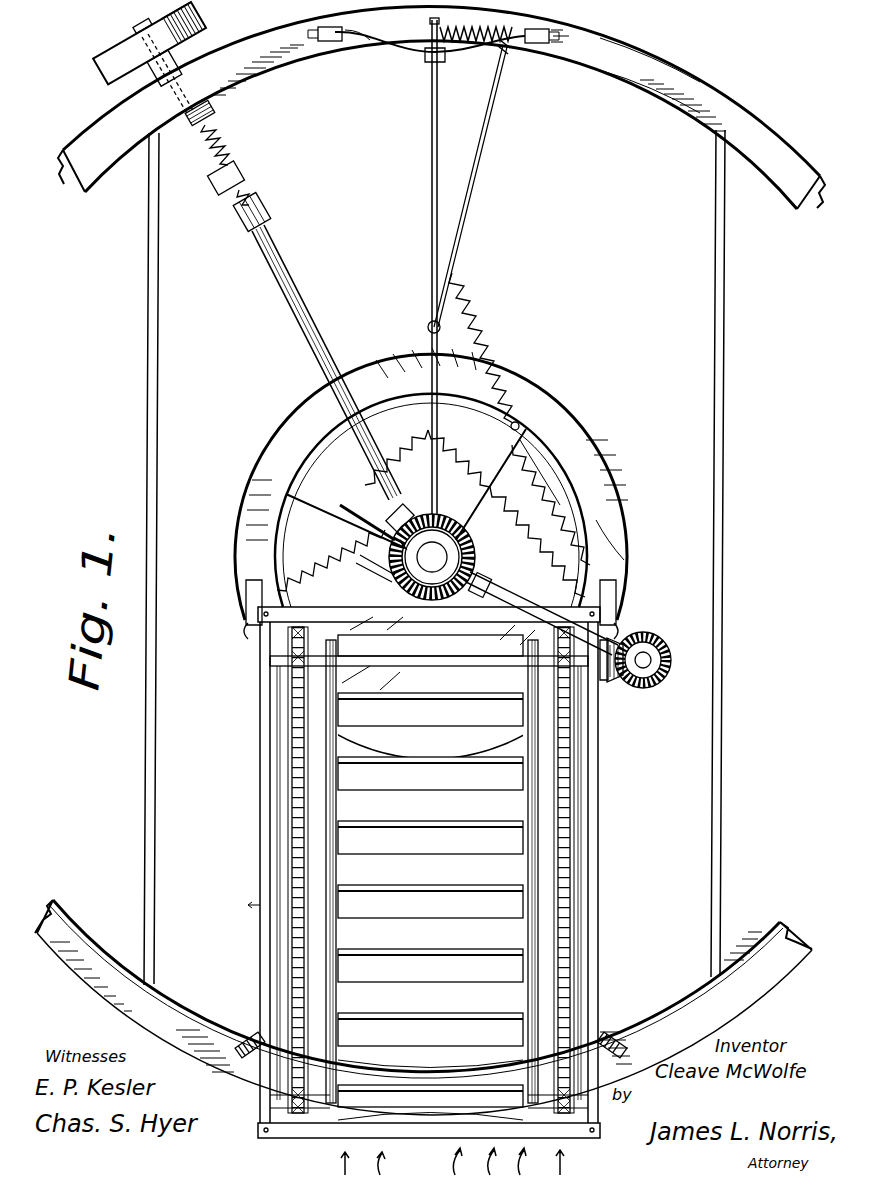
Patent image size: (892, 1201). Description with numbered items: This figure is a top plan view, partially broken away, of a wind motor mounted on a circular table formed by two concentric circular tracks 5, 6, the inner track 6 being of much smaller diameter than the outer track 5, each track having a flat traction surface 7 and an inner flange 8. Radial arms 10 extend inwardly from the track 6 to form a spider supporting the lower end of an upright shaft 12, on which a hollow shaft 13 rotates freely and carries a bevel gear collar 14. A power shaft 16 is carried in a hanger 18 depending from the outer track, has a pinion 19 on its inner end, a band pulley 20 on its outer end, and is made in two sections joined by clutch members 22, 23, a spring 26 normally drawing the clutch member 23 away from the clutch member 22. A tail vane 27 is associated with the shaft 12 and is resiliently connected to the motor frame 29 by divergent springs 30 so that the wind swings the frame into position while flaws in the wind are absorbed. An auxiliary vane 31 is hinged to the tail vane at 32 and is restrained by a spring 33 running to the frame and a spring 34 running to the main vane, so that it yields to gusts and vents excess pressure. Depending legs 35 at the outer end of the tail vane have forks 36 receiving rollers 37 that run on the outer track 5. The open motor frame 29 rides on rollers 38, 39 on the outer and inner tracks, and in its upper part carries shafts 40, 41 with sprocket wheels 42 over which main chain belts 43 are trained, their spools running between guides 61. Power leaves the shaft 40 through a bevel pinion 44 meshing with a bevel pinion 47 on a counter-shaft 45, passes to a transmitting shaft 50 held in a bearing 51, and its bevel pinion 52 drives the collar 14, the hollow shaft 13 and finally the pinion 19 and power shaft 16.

The circular track 5 is at (592, 57).
The circular track 6 is at (572, 410).
The flat traction surface 7 is at (622, 70).
The inner flange 8 is at (632, 90).
The radial arm 10 is at (498, 530).
The shaft 12 is at (430, 550).
The hollow shaft 13 is at (385, 500).
The bevel gear collar 14 is at (365, 520).
The power shaft 16 is at (318, 300).
The hanger 18 is at (216, 118).
The pinion 19 is at (440, 790).
The band pulley 20 is at (222, 20).
The clutch member 22 is at (268, 208).
The clutch member 23 is at (218, 190).
The spring 26 is at (240, 155).
The tail vane 27 is at (432, 250).
The motor frame 29 is at (372, 560).
The spring 30 is at (300, 600).
The auxiliary vane 31 is at (478, 146).
The hinge 32 is at (428, 322).
The spring 33 is at (490, 300).
The spring 34 is at (500, 50).
The depending leg 35 is at (392, 52).
The fork 36 is at (350, 40).
The roller 37 is at (330, 42).
The roller 38 is at (250, 1035).
The roller 39 is at (248, 585).
The shaft 40 is at (275, 652).
The shaft 41 is at (262, 1085).
The sprocket wheel 42 is at (300, 625).
The main chain belt 43 is at (288, 878).
The bevel pinion 44 is at (625, 680).
The counter-shaft 45 is at (670, 600).
The bevel pinion 47 is at (668, 672).
The transmitting shaft 50 is at (566, 548).
The bearing 51 is at (605, 690).
The bevel pinion 52 is at (442, 545).
The guide 61 is at (326, 790).